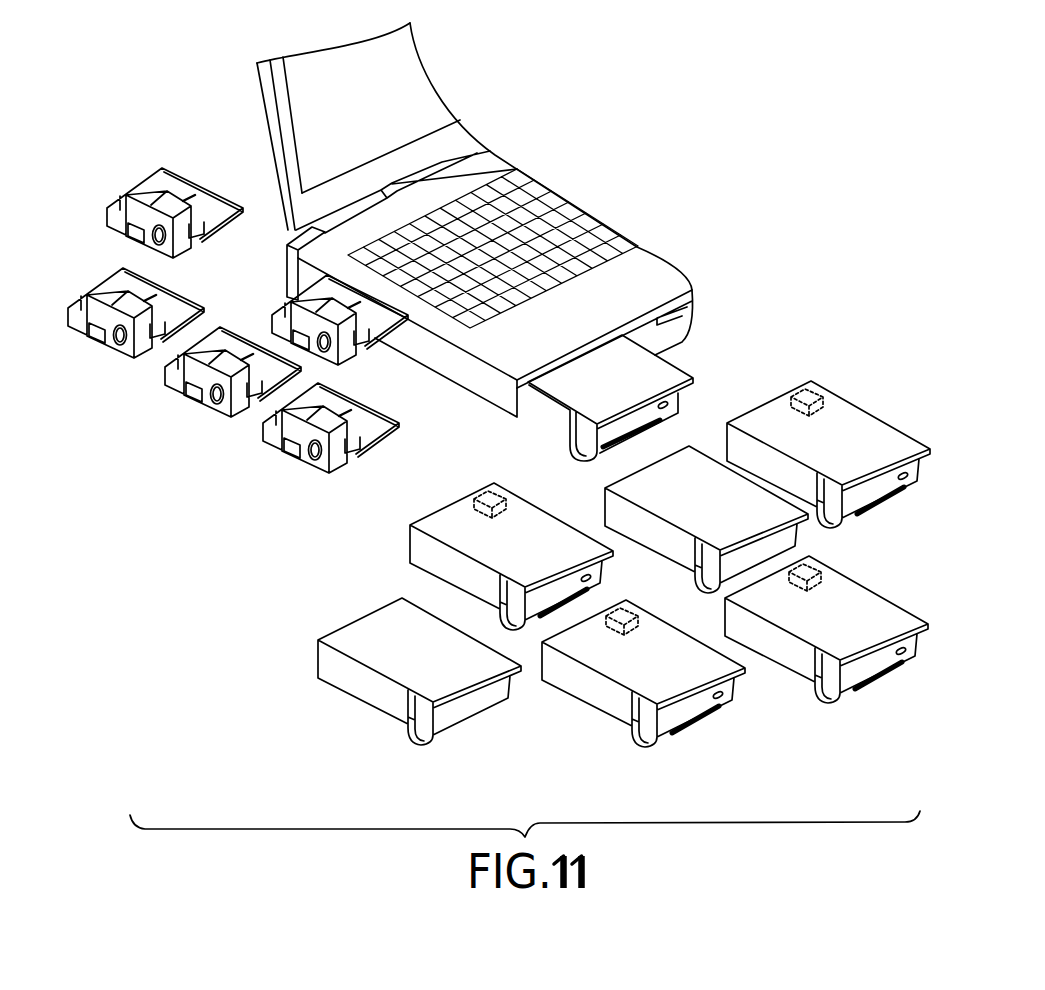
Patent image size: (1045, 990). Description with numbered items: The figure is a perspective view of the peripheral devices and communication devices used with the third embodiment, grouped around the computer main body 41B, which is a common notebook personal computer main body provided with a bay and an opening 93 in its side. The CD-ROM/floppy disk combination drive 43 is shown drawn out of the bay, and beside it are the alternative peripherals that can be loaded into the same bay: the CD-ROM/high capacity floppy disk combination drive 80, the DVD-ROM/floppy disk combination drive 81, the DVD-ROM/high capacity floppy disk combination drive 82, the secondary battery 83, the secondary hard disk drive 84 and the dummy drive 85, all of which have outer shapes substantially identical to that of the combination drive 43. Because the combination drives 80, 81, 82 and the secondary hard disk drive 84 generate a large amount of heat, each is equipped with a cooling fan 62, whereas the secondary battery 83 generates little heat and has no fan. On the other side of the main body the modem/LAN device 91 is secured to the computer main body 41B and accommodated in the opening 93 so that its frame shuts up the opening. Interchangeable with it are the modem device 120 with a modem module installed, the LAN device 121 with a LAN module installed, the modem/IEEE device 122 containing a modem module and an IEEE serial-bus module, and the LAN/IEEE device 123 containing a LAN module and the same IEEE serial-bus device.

The computer main body 41B is at (675, 255).
The CD-ROM/floppy disk combination drive 43 is at (664, 373).
The cooling fan 62 is at (817, 563).
The CD-ROM/high capacity floppy disk combination drive 80 is at (875, 607).
The DVD-ROM/floppy disk combination drive 81 is at (597, 698).
The DVD-ROM/high capacity floppy disk combination drive 82 is at (878, 432).
The secondary battery 83 is at (617, 510).
The secondary hard disk drive 84 is at (437, 520).
The dummy drive 85 is at (352, 632).
The modem/LAN device 91 is at (362, 365).
The opening 93 is at (415, 372).
The modem device 120 is at (134, 177).
The LAN device 121 is at (98, 279).
The modem/IEEE 1394 device 122 is at (180, 399).
The LAN/IEEE 1394 device 123 is at (296, 470).